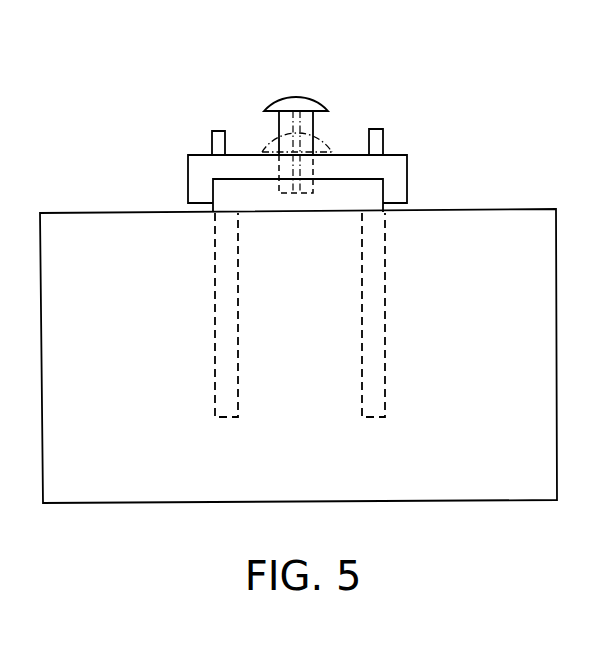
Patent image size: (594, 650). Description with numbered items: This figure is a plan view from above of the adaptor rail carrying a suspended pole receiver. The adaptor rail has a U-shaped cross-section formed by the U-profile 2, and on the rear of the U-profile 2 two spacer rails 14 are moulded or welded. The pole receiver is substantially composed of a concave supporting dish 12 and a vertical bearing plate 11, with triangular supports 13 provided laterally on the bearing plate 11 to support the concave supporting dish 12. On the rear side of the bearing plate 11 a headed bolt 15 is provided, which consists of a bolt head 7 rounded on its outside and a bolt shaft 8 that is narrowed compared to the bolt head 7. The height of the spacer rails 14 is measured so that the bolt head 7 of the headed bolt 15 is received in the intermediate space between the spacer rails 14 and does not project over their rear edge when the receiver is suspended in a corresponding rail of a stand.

The U-profile 2 is at (395, 185).
The bolt head 7 is at (295, 111).
The bolt shaft 8 is at (277, 117).
The bearing plate 11 is at (227, 192).
The concave supporting dish 12 is at (473, 489).
The triangular supports 13 is at (222, 331).
The spacer rails 14 is at (212, 140).
The headed bolt 15 is at (318, 105).